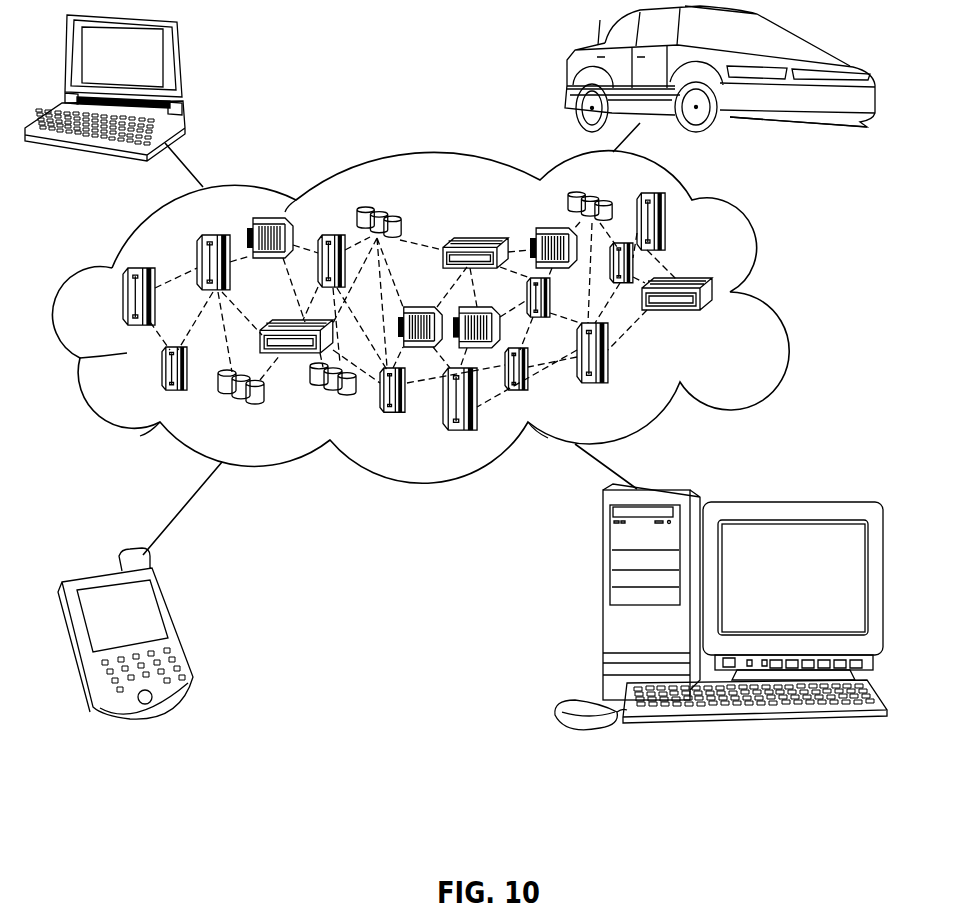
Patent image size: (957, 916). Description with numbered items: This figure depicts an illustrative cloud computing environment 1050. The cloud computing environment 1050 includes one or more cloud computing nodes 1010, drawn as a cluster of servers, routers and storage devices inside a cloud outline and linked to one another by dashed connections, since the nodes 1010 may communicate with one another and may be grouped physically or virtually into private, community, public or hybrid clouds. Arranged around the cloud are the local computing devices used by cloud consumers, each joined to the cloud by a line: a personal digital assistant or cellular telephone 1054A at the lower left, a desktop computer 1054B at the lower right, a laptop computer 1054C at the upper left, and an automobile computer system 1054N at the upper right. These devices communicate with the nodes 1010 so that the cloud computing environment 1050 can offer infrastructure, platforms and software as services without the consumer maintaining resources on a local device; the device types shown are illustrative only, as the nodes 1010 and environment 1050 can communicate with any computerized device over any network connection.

The laptop computer 1054C is at (182, 62).
The automobile computer system 1054N is at (577, 55).
The cloud computing environment 1050 is at (755, 253).
The cloud computing nodes 1010 is at (732, 315).
The personal digital assistant or cellular telephone 1054A is at (177, 628).
The desktop computer 1054B is at (602, 603).